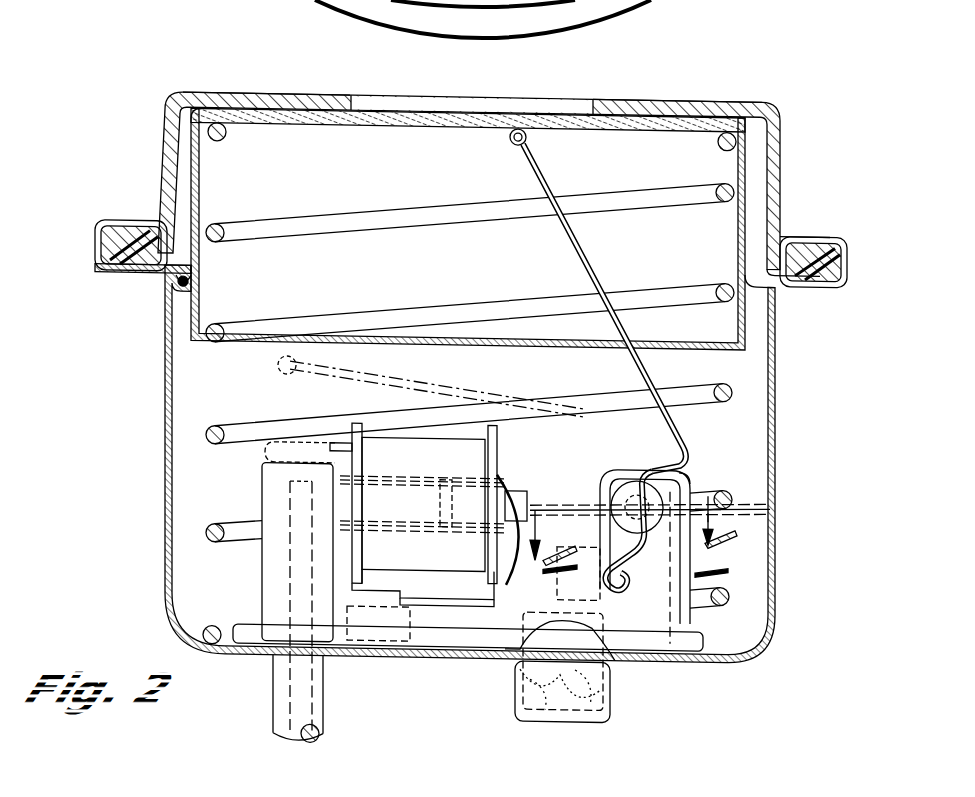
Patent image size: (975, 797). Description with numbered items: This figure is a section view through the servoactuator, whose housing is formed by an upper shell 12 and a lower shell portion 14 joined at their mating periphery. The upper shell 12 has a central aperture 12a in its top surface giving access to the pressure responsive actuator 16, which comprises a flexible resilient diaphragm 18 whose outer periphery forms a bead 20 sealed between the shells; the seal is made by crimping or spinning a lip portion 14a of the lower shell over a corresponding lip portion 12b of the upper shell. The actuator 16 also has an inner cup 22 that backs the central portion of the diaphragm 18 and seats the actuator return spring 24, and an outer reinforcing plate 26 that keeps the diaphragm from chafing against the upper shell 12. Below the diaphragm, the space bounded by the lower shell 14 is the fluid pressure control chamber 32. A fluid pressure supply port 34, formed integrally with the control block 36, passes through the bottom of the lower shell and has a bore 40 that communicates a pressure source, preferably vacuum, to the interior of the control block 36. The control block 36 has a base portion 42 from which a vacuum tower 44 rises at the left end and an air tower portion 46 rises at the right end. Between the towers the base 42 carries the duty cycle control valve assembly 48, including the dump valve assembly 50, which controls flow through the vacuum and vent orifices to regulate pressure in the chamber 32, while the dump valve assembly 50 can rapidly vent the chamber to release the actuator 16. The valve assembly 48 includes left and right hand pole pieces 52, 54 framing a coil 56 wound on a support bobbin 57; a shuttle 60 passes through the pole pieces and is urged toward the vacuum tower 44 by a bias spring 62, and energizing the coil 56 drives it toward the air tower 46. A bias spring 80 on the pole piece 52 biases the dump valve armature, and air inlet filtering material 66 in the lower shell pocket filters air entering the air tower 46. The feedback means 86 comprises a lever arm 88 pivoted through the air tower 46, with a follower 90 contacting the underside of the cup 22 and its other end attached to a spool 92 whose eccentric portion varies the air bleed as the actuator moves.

The upper shell 12 is at (165, 155).
The aperture 12a is at (355, 94).
The lip portion 12b is at (795, 226).
The lower shell portion 14 is at (165, 424).
The lip portion 14a is at (845, 235).
The pressure responsive actuator 16 is at (318, 116).
The flexible resilient diaphragm 18 is at (190, 268).
The bead 20 is at (103, 231).
The inner cup 22 is at (392, 120).
The actuator return spring 24 is at (705, 176).
The outer reinforcing plate 26 is at (688, 92).
The fluid pressure control chamber 32 is at (250, 88).
The fluid pressure supply port 34 is at (268, 670).
The control block 36 is at (250, 500).
The bore 40 is at (322, 732).
The base portion 42 is at (243, 621).
The vacuum tower 44 is at (300, 458).
The air tower portion 46 is at (673, 478).
The duty cycle control valve assembly 48 is at (520, 445).
The dump valve assembly 50 is at (418, 574).
The left hand pole piece 52 is at (345, 434).
The right hand pole piece 54 is at (495, 416).
The coil 56 is at (413, 430).
The support bobbin 57 is at (370, 420).
The shuttle 60 is at (525, 486).
The bias spring 62 is at (507, 552).
The air inlet filtering material 66 is at (545, 655).
The bias spring 80 is at (330, 574).
The feedback means 86 is at (645, 449).
The lever arm 88 is at (590, 262).
The follower 90 is at (512, 134).
The spool 92 is at (690, 470).